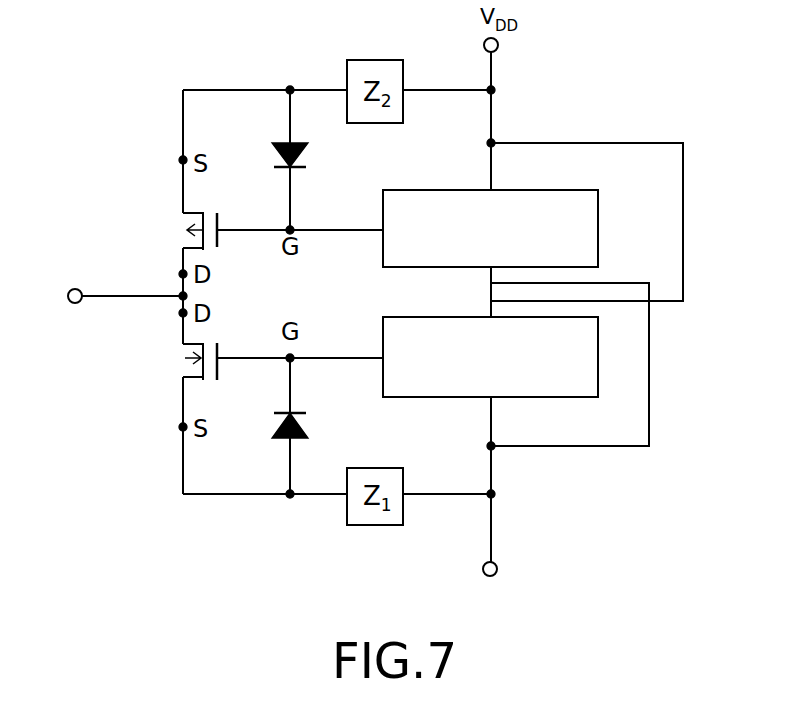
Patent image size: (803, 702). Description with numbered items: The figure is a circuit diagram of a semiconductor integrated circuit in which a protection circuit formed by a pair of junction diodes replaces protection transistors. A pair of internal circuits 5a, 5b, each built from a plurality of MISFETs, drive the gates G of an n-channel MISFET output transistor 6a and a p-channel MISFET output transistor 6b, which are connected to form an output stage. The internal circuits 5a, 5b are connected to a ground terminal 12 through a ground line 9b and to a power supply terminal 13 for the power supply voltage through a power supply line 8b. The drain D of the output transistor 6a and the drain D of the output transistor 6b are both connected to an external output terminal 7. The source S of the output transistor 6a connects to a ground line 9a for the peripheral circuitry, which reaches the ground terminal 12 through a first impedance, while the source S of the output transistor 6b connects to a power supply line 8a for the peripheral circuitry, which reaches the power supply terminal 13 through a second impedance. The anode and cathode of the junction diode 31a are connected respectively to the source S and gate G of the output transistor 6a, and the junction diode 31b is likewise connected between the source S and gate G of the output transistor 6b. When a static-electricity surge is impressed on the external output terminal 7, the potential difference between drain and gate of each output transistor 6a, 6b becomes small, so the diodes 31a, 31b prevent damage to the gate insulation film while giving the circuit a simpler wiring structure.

The internal circuit 5a is at (388, 316).
The internal circuit 5b is at (388, 188).
The n-channel MISFET output transistor 6a is at (186, 356).
The p-channel MISFET output transistor 6b is at (188, 227).
The external output terminal 7 is at (79, 290).
The power supply line 8a is at (183, 100).
The power supply line 8b is at (493, 94).
The ground line 9a is at (183, 488).
The ground line 9b is at (494, 468).
The ground terminal 12 is at (497, 566).
The power supply terminal 13 is at (498, 43).
The junction diode 31a is at (338, 429).
The junction diode 31b is at (338, 158).